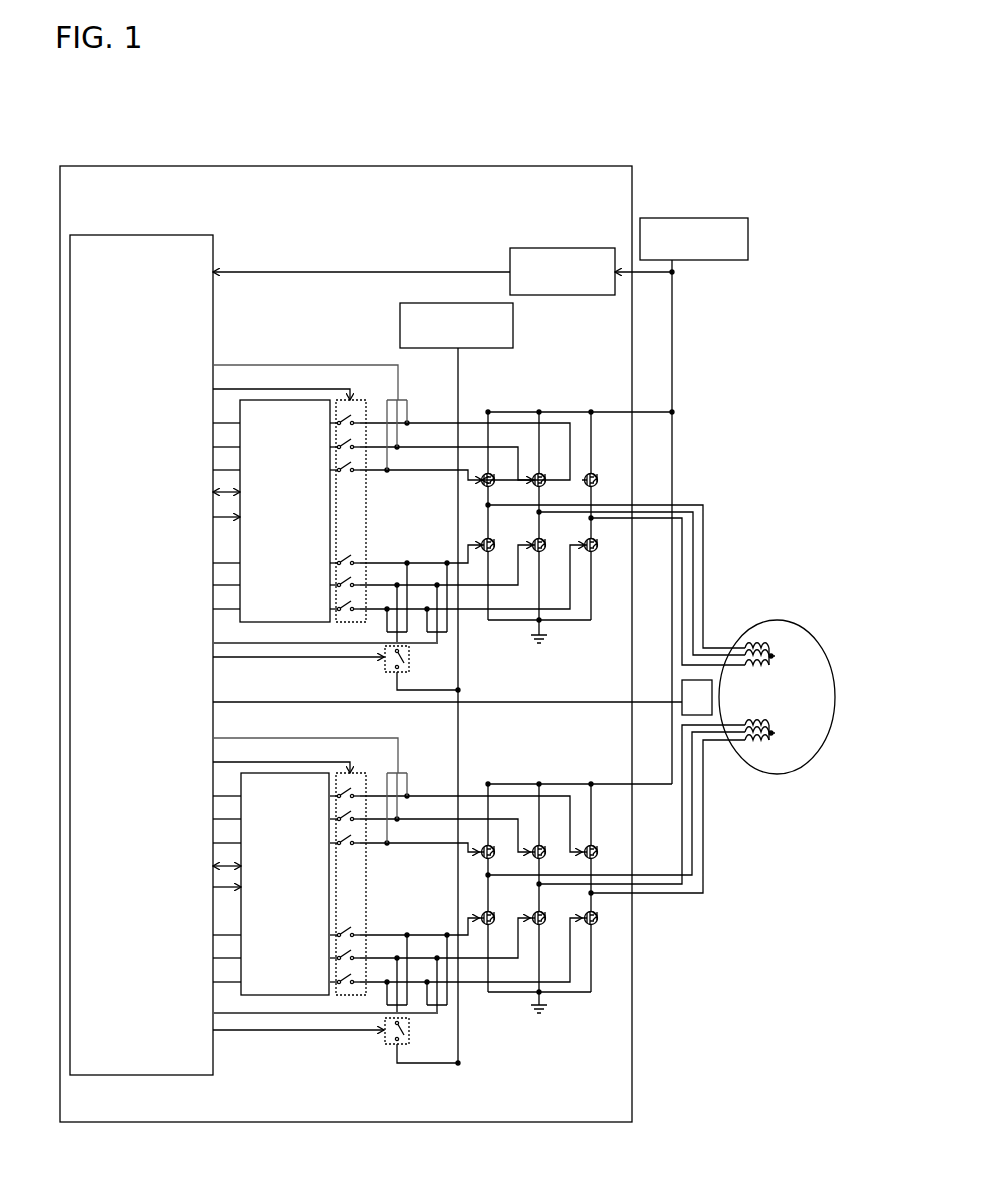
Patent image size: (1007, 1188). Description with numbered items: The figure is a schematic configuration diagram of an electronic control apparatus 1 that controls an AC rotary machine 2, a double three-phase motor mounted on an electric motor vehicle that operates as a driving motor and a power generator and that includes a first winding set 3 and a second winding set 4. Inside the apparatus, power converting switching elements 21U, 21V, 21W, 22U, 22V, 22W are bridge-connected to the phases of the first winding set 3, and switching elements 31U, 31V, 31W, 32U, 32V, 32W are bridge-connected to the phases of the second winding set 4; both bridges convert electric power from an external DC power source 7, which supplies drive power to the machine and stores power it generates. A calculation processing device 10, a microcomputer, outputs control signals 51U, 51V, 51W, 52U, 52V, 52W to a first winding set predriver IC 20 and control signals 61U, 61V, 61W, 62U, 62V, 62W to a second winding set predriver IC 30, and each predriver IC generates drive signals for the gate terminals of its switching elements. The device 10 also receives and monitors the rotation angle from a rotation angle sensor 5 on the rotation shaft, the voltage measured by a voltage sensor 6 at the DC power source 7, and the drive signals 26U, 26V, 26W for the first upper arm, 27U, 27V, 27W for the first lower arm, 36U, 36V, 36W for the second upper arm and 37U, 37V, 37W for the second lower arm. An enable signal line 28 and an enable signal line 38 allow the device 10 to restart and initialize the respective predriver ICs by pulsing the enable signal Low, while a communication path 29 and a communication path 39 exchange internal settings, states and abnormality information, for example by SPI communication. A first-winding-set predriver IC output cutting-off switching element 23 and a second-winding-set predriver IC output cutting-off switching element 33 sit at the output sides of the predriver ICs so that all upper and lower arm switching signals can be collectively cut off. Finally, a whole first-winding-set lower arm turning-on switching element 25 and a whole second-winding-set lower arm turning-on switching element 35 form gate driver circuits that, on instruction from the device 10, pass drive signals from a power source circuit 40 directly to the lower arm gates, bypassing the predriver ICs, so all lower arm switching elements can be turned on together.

The electronic control apparatus 1 is at (128, 166).
The AC rotary machine 2 is at (800, 643).
The first winding set 3 is at (758, 645).
The second winding set 4 is at (758, 742).
The rotation angle sensor 5 is at (700, 680).
The voltage sensor 6 is at (540, 248).
The DC power source 7 is at (689, 218).
The calculation processing device 10 is at (190, 235).
The first winding set predriver IC 20 is at (288, 400).
The switching element for first winding set upper arm (U phase) 21U is at (493, 473).
The switching element for first winding set upper arm (V phase) 21V is at (544, 473).
The switching element for first winding set upper arm (W phase) 21W is at (600, 478).
The switching element for first winding set lower arm (U phase) 22U is at (492, 550).
The switching element for first winding set lower arm (V phase) 22V is at (543, 551).
The switching element for first winding set lower arm (W phase) 22W is at (600, 545).
The first-winding-set predriver IC output cutting-off switching element 23 is at (370, 536).
The whole first-winding-set lower arm turning-on switching element 25 is at (410, 656).
The drive signal for first winding set upper arm (U phase) 26U is at (421, 467).
The drive signal for first winding set upper arm (V phase) 26V is at (446, 455).
The drive signal for first winding set upper arm (W phase) 26W is at (465, 443).
The drive signal for first winding set lower arm (U phase) 27U is at (421, 555).
The drive signal for first winding set lower arm (V phase) 27V is at (446, 566).
The drive signal for first winding set lower arm (W phase) 27W is at (440, 632).
The enable signal line for first winding set predriver IC 28 is at (225, 520).
The communication path for first winding set predriver IC 29 is at (225, 494).
The second winding set predriver IC 30 is at (298, 997).
The switching element for second winding set upper arm (U phase) 31U is at (493, 845).
The switching element for second winding set upper arm (V phase) 31V is at (544, 845).
The switching element for second winding set upper arm (W phase) 31W is at (600, 850).
The switching element for second winding set lower arm (U phase) 32U is at (492, 923).
The switching element for second winding set lower arm (V phase) 32V is at (543, 924).
The switching element for second winding set lower arm (W phase) 32W is at (600, 920).
The second-winding-set predriver IC output cutting-off switching element 33 is at (370, 911).
The whole second-winding-set lower arm turning-on switching element 35 is at (410, 1030).
The drive signal for second winding set upper arm (U phase) 36U is at (419, 839).
The drive signal for second winding set upper arm (V phase) 36V is at (445, 827).
The drive signal for second winding set upper arm (W phase) 36W is at (471, 816).
The drive signal for second winding set lower arm (U phase) 37U is at (419, 927).
The drive signal for second winding set lower arm (V phase) 37V is at (445, 939).
The drive signal for second winding set lower arm (W phase) 37W is at (440, 1005).
The enable signal line for second winding set predriver IC 38 is at (225, 893).
The communication path for second winding set predriver IC 39 is at (225, 868).
The power source circuit 40 is at (438, 303).
The control signal (first winding set, U phase upper arm) 51U is at (209, 470).
The control signal (first winding set, V phase upper arm) 51V is at (210, 447).
The control signal (first winding set, W phase upper arm) 51W is at (208, 423).
The control signal (first winding set, U phase lower arm) 52U is at (209, 563).
The control signal (first winding set, V phase lower arm) 52V is at (210, 585).
The control signal (first winding set, W phase lower arm) 52W is at (208, 609).
The control signal (second winding set, U phase upper arm) 61U is at (210, 843).
The control signal (second winding set, V phase upper arm) 61V is at (210, 819).
The control signal (second winding set, W phase upper arm) 61W is at (208, 796).
The control signal (second winding set, U phase lower arm) 62U is at (210, 935).
The control signal (second winding set, V phase lower arm) 62V is at (210, 958).
The control signal (second winding set, W phase lower arm) 62W is at (208, 982).